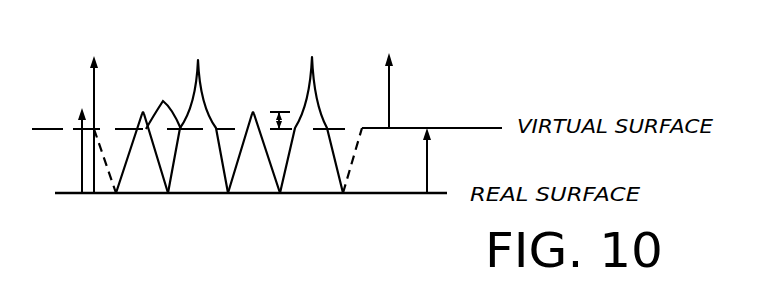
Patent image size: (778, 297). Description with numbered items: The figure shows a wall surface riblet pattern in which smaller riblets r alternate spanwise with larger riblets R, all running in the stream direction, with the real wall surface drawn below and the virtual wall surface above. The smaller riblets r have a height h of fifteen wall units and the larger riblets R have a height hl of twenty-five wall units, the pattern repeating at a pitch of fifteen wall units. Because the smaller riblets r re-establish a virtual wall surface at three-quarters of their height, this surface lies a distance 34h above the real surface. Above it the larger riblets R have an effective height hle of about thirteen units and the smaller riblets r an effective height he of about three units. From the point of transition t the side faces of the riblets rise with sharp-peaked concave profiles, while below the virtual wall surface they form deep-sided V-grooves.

The point of transition t is at (163, 106).
The height of smaller riblets h is at (53, 150).
The height of larger riblets hl is at (128, 114).
The effective height of smaller riblets he is at (286, 99).
The effective height of larger riblets hle is at (442, 90).
The three-quarters riblet height 34h is at (460, 160).
The smaller riblets r is at (275, 193).
The larger riblets R is at (337, 193).